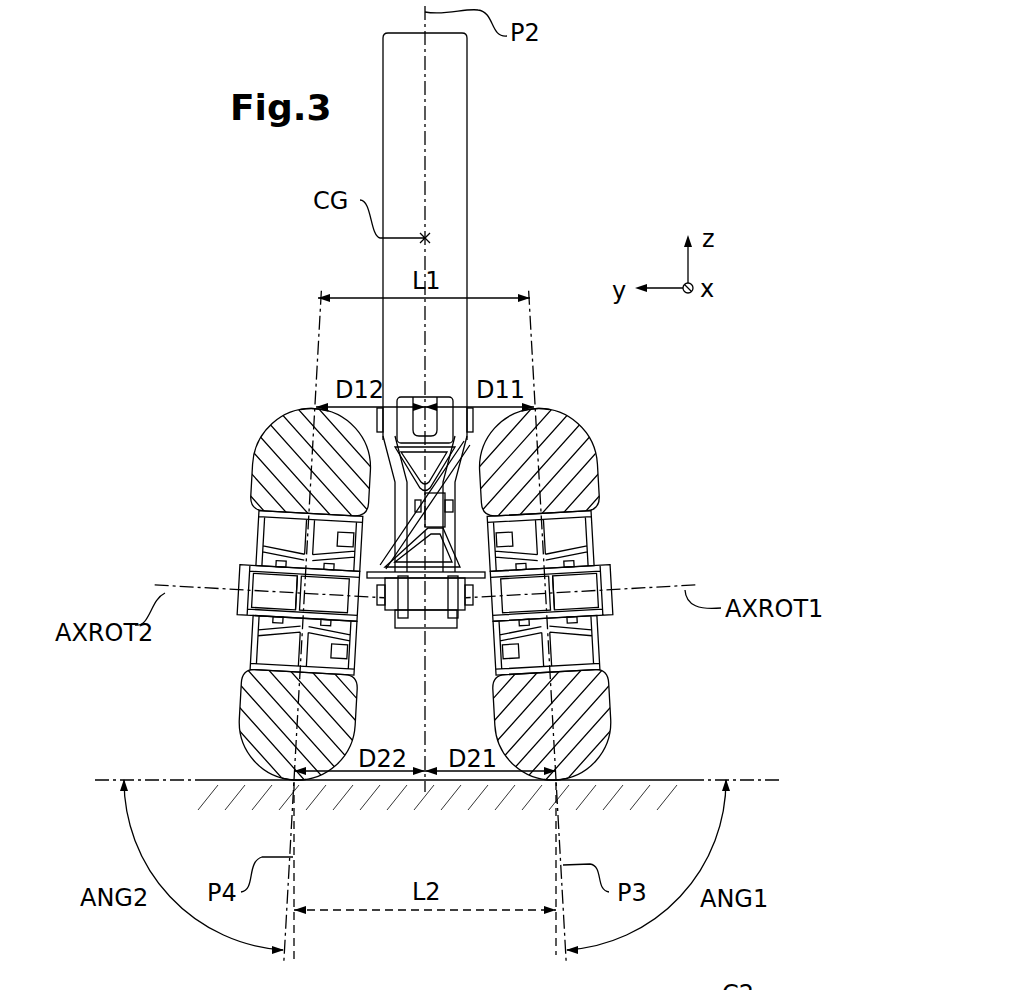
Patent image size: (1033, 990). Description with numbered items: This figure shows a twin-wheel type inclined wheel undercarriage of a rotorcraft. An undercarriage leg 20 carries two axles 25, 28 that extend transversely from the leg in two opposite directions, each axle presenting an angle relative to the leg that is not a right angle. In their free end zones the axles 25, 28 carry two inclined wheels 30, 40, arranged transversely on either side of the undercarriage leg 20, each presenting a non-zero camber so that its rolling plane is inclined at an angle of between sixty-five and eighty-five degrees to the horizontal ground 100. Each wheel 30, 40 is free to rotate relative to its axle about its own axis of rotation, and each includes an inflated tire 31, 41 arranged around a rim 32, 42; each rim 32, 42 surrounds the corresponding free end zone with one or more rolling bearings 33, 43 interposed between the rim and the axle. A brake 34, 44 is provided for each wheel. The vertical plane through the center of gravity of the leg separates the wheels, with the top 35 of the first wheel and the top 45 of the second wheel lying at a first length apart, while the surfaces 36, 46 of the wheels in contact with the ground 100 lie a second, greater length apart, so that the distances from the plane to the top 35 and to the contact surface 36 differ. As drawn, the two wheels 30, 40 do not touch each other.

The undercarriage leg 20 is at (462, 302).
The axle 25 is at (429, 631).
The axle 28 is at (426, 541).
The wheel 30 is at (581, 625).
The inflated tire 31 is at (561, 587).
The rim 32 is at (575, 541).
The rolling bearing 33 is at (587, 586).
The brake 34 is at (523, 669).
The top 35 is at (567, 378).
The surface 36 is at (604, 813).
The wheel 40 is at (271, 625).
The inflated tire 41 is at (292, 587).
The rim 42 is at (266, 541).
The rolling bearing 43 is at (270, 610).
The brake 44 is at (328, 670).
The top 45 is at (284, 378).
The surface 46 is at (259, 813).
The ground 100 is at (437, 764).